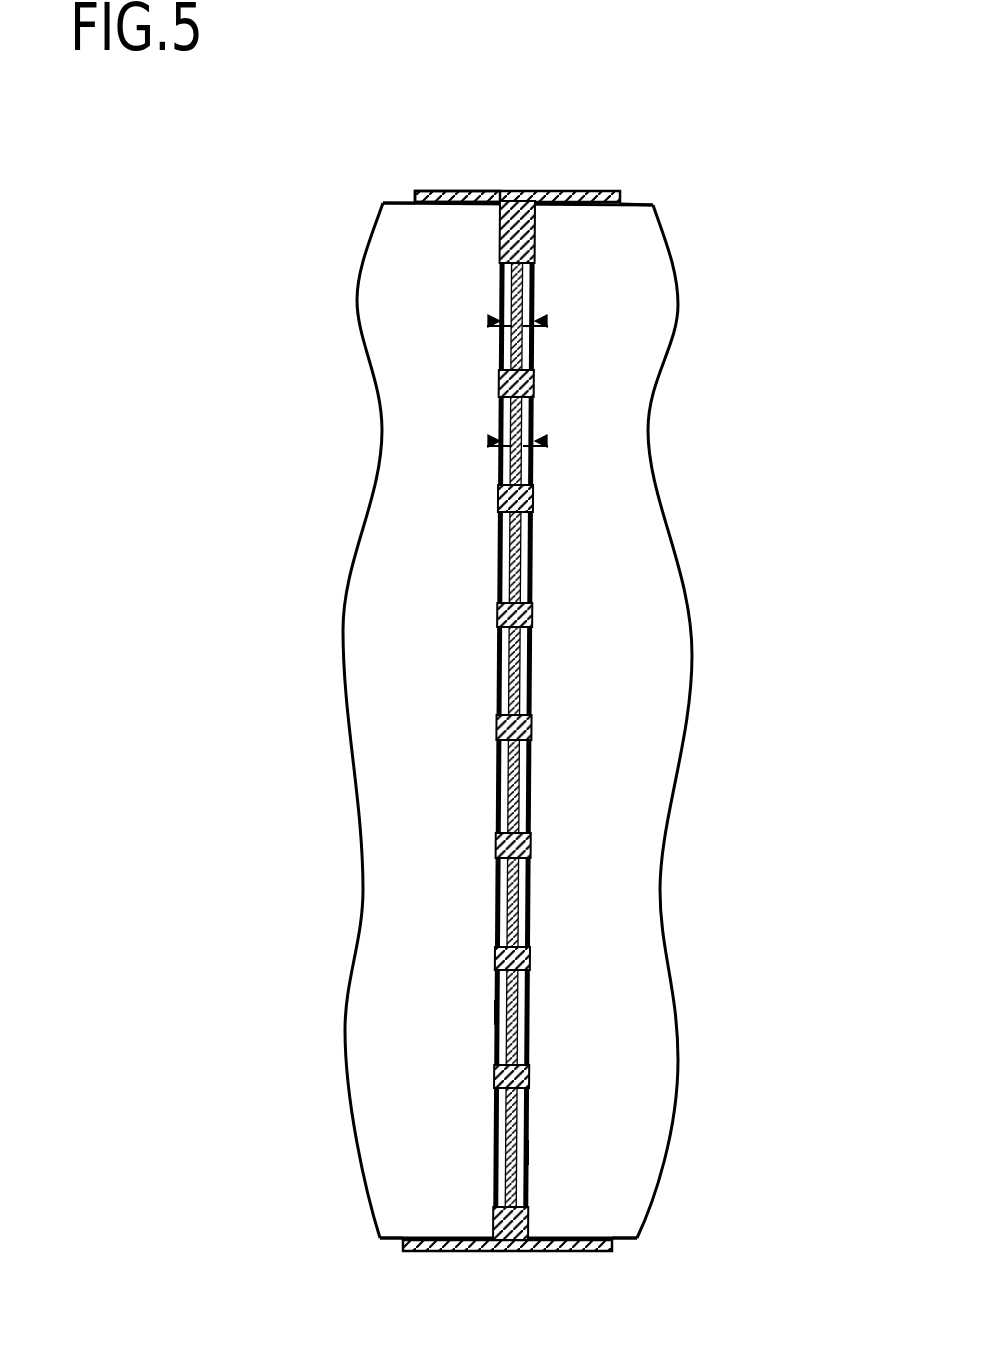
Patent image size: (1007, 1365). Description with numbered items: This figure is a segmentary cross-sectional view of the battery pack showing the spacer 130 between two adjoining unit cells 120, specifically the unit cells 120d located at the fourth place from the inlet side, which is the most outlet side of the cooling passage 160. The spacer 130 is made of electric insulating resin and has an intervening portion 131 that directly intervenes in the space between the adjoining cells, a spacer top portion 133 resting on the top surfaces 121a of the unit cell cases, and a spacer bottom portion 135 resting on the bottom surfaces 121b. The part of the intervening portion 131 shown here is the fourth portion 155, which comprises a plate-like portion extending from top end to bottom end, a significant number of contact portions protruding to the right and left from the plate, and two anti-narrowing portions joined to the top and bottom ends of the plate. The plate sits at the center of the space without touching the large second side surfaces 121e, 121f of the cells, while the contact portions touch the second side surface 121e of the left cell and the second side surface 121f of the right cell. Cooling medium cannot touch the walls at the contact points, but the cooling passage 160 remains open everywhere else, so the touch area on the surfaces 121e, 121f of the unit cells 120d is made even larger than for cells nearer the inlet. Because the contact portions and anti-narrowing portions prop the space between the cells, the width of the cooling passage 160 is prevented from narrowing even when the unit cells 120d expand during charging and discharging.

The unit cell 120 is at (504, 720).
The unit cell at the fourth place from the inlet side 120d is at (365, 690).
The top surface 121a is at (402, 197).
The bottom surface 121b is at (393, 1250).
The second side surface 121e is at (497, 1012).
The second side surface 121f is at (527, 1153).
The spacer 130 is at (519, 148).
The intervening portion 131 is at (656, 720).
The spacer top portion 133 is at (453, 191).
The spacer bottom portion 135 is at (447, 1251).
The fourth portion 155 is at (513, 735).
The cooling passage 160 is at (500, 441).